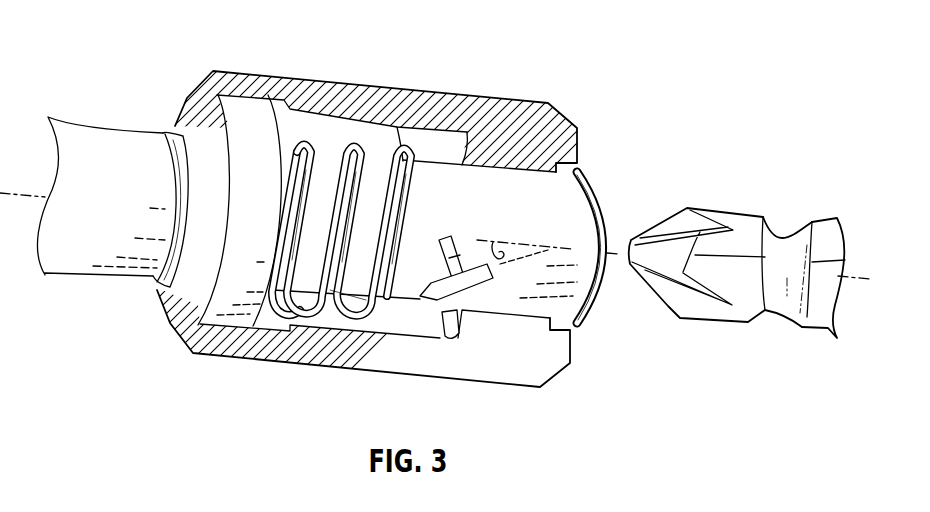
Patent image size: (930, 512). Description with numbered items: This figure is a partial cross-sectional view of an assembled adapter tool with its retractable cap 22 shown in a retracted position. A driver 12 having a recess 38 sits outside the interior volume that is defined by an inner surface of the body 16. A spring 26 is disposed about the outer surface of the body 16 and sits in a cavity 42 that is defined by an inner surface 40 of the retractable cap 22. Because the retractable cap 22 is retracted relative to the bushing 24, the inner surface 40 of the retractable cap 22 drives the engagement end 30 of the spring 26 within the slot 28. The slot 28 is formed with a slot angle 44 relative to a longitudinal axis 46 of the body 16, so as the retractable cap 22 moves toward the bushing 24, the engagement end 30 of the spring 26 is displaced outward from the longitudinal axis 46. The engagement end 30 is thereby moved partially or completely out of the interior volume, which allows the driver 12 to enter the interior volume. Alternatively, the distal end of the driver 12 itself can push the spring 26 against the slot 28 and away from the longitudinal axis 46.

The driver 12 is at (715, 210).
The body 16 is at (365, 191).
The retractable cap 22 is at (502, 125).
The bushing 24 is at (244, 113).
The spring 26 is at (382, 162).
The slot 28 is at (477, 287).
The engagement end 30 is at (457, 316).
The recess 38 is at (787, 232).
The inner surface 40 is at (396, 127).
The cavity 42 is at (432, 143).
The slot angle 44 is at (493, 242).
The longitudinal axis 46 is at (585, 215).